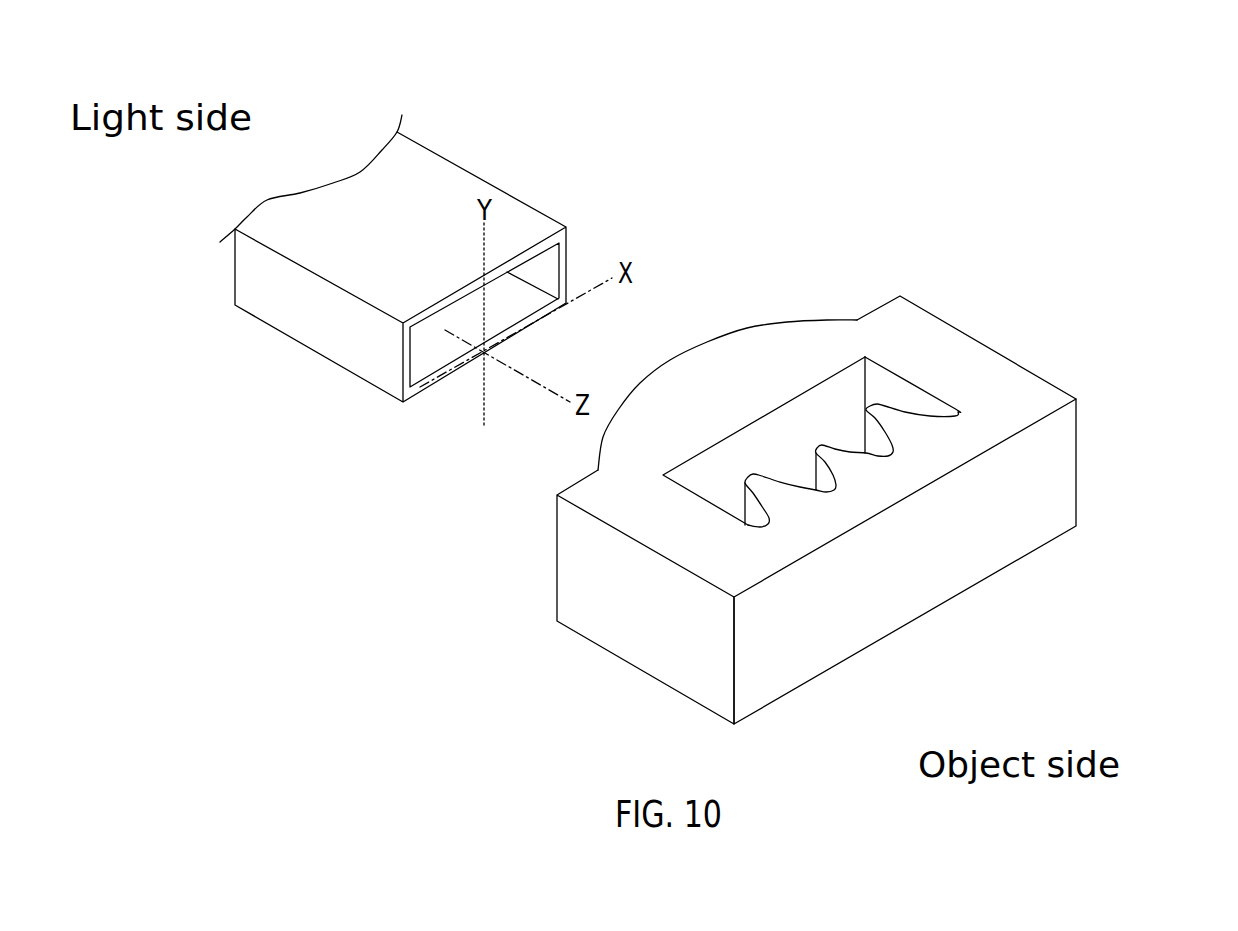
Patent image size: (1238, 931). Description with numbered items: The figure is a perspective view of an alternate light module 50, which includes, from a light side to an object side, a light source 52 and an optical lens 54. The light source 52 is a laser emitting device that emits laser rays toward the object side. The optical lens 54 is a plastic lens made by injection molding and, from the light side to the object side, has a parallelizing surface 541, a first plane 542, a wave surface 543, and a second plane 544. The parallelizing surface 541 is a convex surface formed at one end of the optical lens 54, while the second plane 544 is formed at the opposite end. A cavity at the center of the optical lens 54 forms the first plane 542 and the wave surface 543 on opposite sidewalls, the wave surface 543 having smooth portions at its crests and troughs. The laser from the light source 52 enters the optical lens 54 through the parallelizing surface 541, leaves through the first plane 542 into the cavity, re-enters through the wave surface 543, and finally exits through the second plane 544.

The light module 50 is at (1145, 163).
The light source 52 is at (448, 187).
The optical lens 54 is at (1032, 398).
The parallelizing surface 541 is at (777, 327).
The first plane 542 is at (828, 413).
The wave surface 543 is at (918, 410).
The second plane 544 is at (1057, 497).